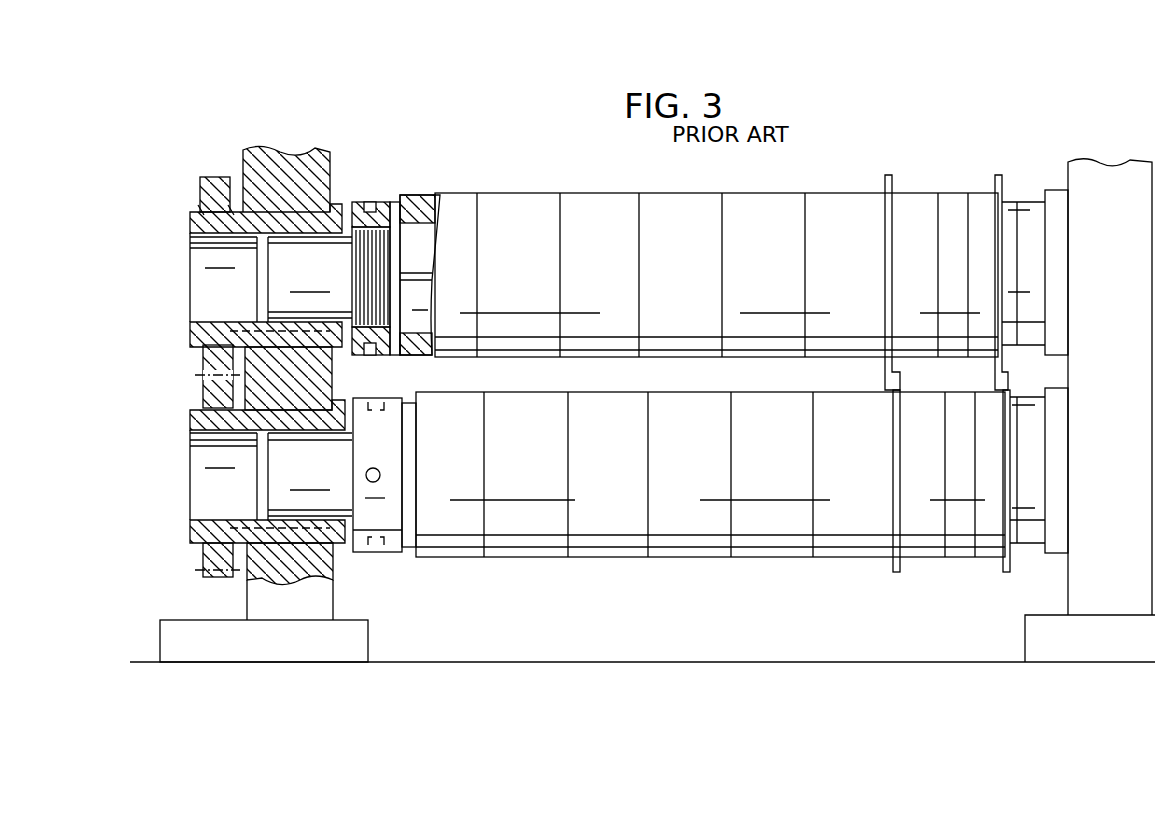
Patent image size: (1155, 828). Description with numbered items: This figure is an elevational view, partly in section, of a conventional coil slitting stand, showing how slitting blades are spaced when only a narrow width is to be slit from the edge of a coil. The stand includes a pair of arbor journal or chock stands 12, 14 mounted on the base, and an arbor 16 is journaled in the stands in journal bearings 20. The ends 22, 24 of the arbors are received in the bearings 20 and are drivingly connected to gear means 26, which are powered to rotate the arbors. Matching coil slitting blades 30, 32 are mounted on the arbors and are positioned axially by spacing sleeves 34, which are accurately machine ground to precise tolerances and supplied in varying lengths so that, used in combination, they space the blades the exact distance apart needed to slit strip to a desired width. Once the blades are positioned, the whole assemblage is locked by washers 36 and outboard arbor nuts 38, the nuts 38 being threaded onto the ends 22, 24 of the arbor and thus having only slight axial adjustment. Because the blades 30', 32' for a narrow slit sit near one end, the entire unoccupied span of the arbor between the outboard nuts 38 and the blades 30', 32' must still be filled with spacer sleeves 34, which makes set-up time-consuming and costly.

The arbor journal stand 12 is at (297, 162).
The arbor journal stand 14 is at (1110, 175).
The arbor 16 is at (425, 235).
The journal bearing 20 is at (312, 220).
The arbor end 22 is at (278, 284).
The arbor end 24 is at (278, 480).
The gear means 26 is at (200, 390).
The coil slitting blade 30 is at (1009, 254).
The coil slitting blade 30' is at (902, 254).
The coil slitting blade 32 is at (992, 507).
The coil slitting blade 32' is at (892, 517).
The spacing sleeve 34 is at (742, 207).
The washer 36 is at (1012, 285).
The outboard arbor nut 38 is at (386, 205).